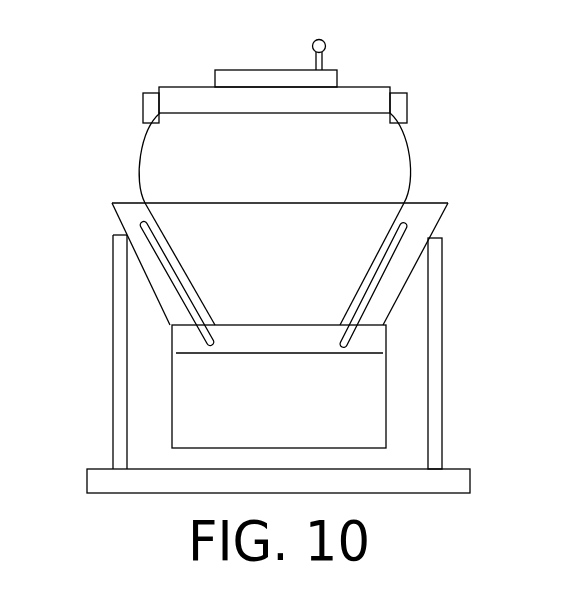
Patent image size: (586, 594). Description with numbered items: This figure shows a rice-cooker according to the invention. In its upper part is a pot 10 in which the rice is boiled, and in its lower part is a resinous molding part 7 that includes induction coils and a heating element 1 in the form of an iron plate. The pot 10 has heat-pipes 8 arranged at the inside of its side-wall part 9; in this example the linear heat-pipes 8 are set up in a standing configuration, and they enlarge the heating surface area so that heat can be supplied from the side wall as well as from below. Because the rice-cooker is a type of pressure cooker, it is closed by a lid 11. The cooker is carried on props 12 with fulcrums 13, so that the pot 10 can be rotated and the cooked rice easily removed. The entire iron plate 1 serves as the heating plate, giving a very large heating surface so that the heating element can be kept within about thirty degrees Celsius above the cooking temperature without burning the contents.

The heating element 1 is at (377, 343).
The resinous molding part 7 is at (188, 412).
The heat-pipes 8 is at (418, 204).
The side-wall part 9 is at (427, 228).
The pot 10 is at (410, 153).
The lid 11 is at (378, 86).
The props 12 is at (113, 343).
The fulcrums 13 is at (115, 235).